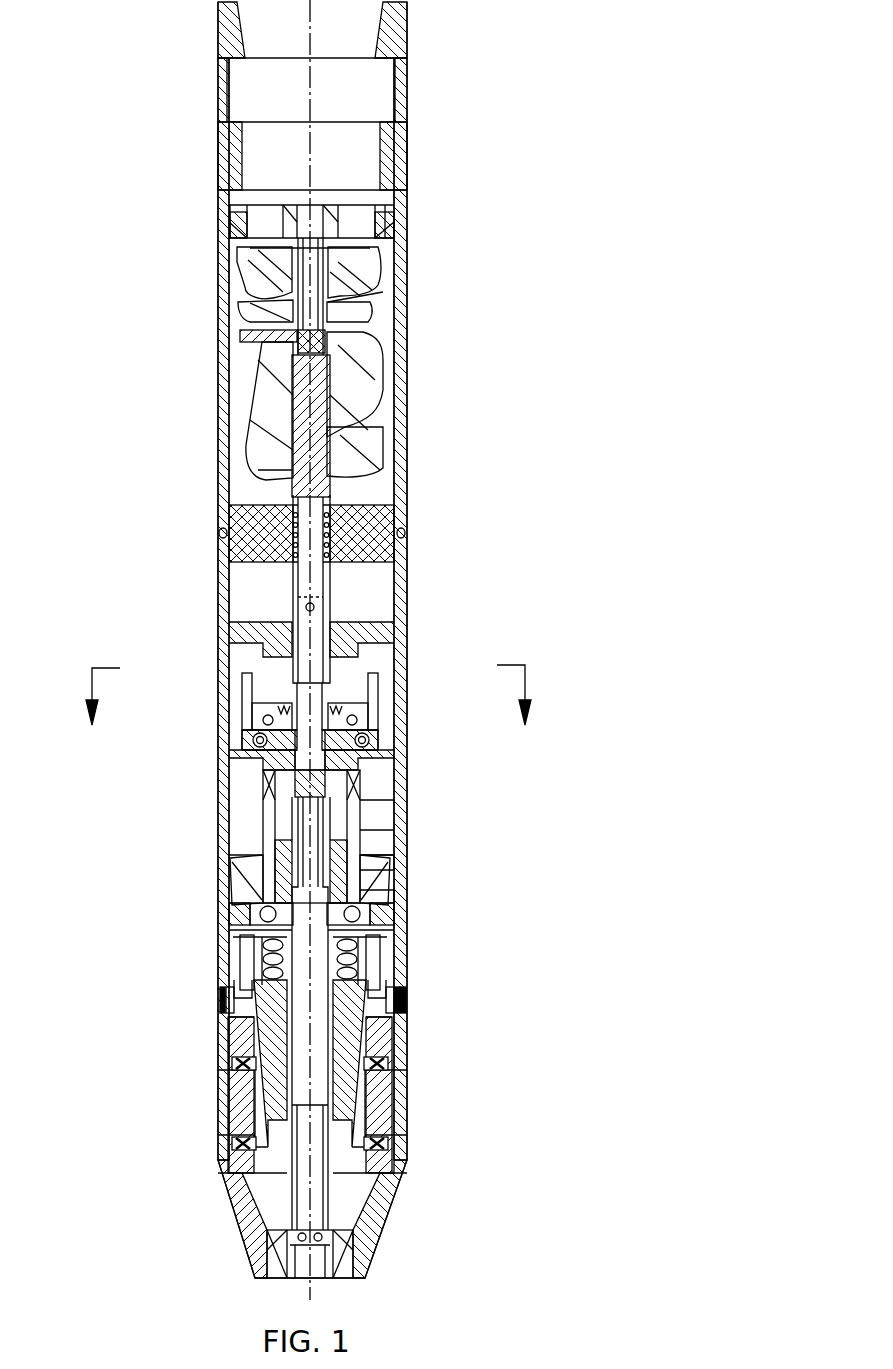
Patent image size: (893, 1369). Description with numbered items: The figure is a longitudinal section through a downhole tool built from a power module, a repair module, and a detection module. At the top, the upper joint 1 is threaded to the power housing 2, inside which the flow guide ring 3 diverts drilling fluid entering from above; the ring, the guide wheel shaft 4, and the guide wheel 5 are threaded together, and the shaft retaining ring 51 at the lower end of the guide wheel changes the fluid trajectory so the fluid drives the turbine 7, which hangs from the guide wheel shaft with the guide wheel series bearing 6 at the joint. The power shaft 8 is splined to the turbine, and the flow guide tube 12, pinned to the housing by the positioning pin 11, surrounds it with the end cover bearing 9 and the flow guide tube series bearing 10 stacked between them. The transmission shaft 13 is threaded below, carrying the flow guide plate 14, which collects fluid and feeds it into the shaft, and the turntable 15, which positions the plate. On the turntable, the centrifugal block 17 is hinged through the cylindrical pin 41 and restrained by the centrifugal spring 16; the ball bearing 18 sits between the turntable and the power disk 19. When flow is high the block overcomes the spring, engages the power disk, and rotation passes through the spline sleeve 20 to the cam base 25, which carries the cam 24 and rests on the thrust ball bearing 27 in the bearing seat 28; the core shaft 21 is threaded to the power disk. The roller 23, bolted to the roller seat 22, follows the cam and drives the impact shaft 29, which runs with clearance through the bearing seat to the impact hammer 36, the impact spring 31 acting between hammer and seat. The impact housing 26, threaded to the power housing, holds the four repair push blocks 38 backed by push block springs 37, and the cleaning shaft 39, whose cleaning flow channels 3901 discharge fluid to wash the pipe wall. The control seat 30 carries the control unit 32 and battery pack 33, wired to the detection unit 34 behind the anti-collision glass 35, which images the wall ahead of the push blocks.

The upper joint 1 is at (247, 115).
The power housing 2 is at (226, 122).
The flow guide ring 3 is at (224, 178).
The guide wheel shaft 4 is at (231, 198).
The guide wheel 5 is at (235, 232).
The guide wheel series bearing 6 is at (255, 267).
The turbine 7 is at (255, 300).
The power shaft 8 is at (297, 348).
The end cover bearing 9 is at (262, 400).
The flow guide tube series bearing 10 is at (280, 447).
The positioning pin 11 is at (250, 480).
The flow guide tube 12 is at (222, 530).
The transmission shaft 13 is at (293, 587).
The flow guide plate 14 is at (240, 622).
The turntable 15 is at (290, 690).
The centrifugal spring 16 is at (350, 690).
The centrifugal block 17 is at (348, 718).
The ball bearing 18 is at (362, 745).
The power disk 19 is at (383, 754).
The spline sleeve 20 is at (293, 792).
The core shaft 21 is at (275, 840).
The roller seat 22 is at (276, 850).
The roller 23 is at (268, 855).
The cam 24 is at (268, 878).
The cam base 25 is at (392, 845).
The impact housing 26 is at (392, 862).
The thrust ball bearing 27 is at (390, 902).
The bearing seat 28 is at (387, 927).
The impact shaft 29 is at (252, 912).
The control seat 30 is at (253, 937).
The impact spring 31 is at (262, 960).
The control unit 32 is at (222, 1000).
The battery pack 33 is at (393, 965).
The detection unit 34 is at (222, 1017).
The anti-collision glass 35 is at (403, 998).
The impact hammer 36 is at (370, 1025).
The push block spring 37 is at (385, 1065).
The repair push block 38 is at (388, 1140).
The cleaning shaft 39 is at (327, 1198).
The cleaning flow channel 3901 is at (323, 1235).
The cylindrical pin 41 is at (311, 692).
The shaft retaining ring 51 is at (322, 322).